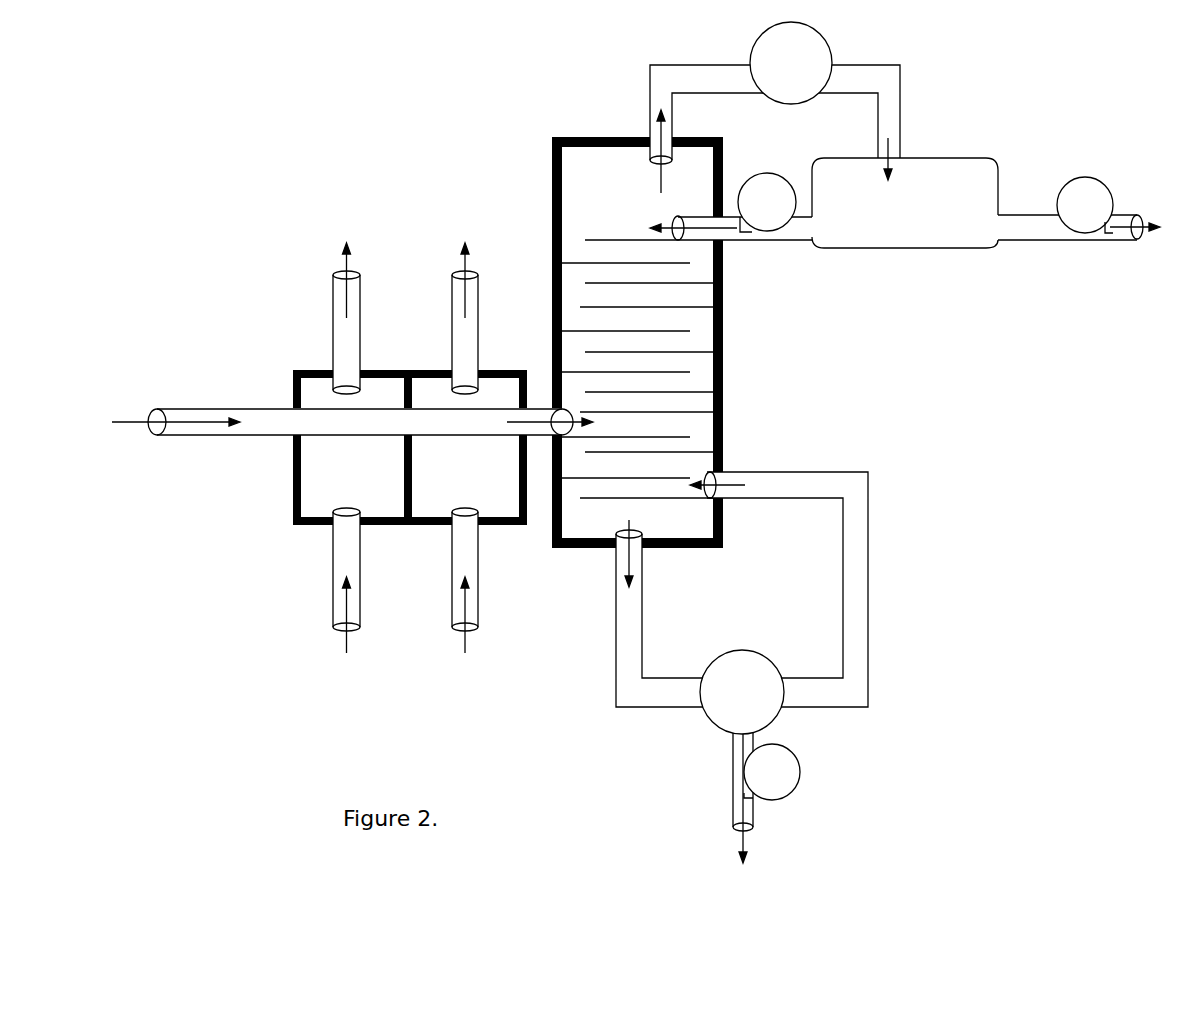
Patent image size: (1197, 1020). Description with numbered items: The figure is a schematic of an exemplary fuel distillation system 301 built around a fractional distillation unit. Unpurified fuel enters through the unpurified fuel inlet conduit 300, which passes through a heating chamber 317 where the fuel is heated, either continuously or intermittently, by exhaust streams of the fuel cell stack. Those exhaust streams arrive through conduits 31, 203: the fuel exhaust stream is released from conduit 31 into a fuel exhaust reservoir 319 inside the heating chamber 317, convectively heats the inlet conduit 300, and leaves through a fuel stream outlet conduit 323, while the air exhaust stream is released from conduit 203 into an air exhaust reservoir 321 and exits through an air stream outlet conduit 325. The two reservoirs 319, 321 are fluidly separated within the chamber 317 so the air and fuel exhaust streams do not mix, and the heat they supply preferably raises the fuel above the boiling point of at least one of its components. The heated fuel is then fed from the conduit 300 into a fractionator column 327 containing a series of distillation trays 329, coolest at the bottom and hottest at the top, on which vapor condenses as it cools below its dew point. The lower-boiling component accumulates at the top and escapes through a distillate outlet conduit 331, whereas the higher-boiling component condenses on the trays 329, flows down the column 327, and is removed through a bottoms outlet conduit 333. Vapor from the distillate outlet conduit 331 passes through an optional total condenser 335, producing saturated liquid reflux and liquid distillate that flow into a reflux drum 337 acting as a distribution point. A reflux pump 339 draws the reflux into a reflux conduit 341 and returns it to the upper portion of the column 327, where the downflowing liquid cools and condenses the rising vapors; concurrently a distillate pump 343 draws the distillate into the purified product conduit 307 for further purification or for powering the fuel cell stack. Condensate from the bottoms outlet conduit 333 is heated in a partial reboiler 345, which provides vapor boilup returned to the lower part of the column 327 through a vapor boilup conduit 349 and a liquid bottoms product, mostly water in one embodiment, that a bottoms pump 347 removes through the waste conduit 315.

The unpurified fuel inlet conduit 300 is at (165, 436).
The heating chamber 317 is at (293, 385).
The fuel exhaust reservoir 319 is at (330, 487).
The air exhaust reservoir 321 is at (457, 480).
The fuel stream outlet conduit 323 is at (333, 333).
The air stream outlet conduit 325 is at (452, 333).
The fuel exhaust conduit 31 is at (333, 568).
The air exhaust conduit 203 is at (478, 568).
The fractionator column 327 is at (552, 187).
The distillation trays 329 is at (700, 392).
The distillate outlet conduit 331 is at (648, 117).
The bottoms outlet conduit 333 is at (642, 617).
The total condenser 335 is at (817, 30).
The reflux drum 337 is at (903, 248).
The reflux pump 339 is at (748, 178).
The reflux conduit 341 is at (790, 244).
The distillate pump 343 is at (1085, 177).
The purified product conduit 307 is at (1057, 241).
The partial reboiler 345 is at (713, 720).
The bottoms pump 347 is at (798, 770).
The vapor boilup conduit 349 is at (867, 588).
The waste conduit 315 is at (733, 762).
The fuel distillation system 301 is at (1028, 538).